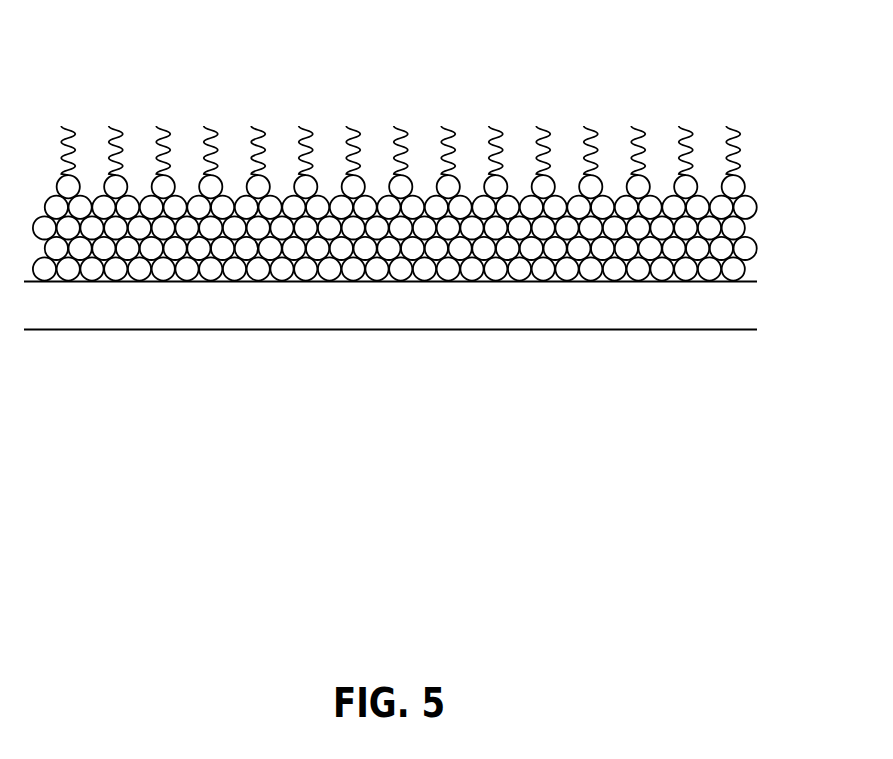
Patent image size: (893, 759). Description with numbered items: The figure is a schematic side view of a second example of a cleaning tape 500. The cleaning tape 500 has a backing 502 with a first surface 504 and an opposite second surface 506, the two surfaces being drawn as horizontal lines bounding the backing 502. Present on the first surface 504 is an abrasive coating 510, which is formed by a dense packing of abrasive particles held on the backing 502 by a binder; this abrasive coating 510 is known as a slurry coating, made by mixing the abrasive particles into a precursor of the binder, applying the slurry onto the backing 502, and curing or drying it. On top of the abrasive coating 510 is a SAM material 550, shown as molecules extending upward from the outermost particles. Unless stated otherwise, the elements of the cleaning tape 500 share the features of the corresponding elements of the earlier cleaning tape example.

The cleaning tape 500 is at (542, 90).
The backing 502 is at (152, 335).
The first surface 504 is at (748, 279).
The second surface 506 is at (336, 330).
The abrasive coating 510 is at (657, 188).
The SAM material 550 is at (170, 123).